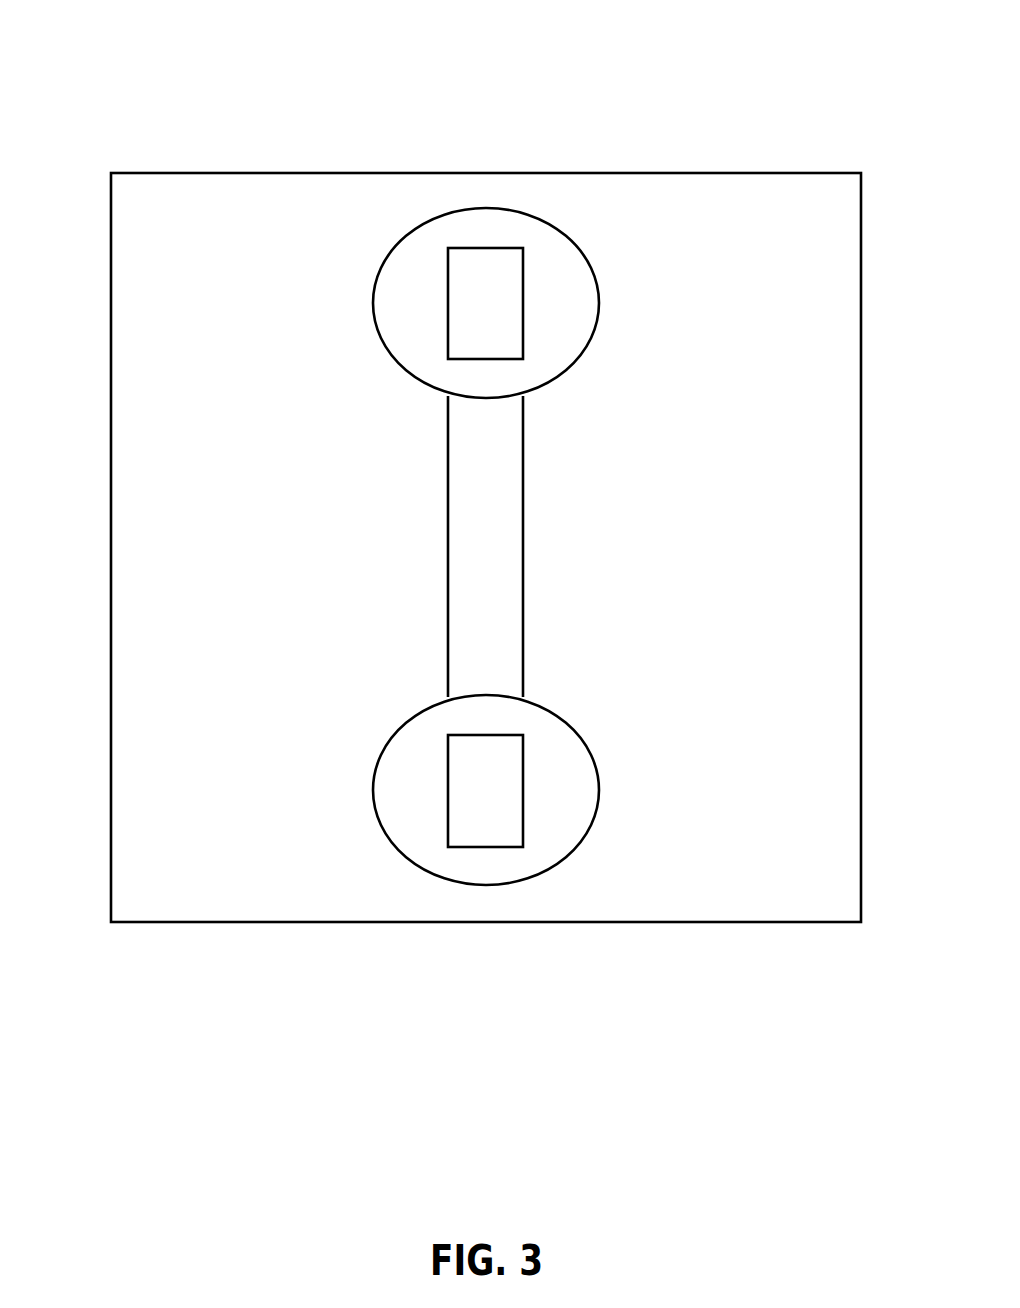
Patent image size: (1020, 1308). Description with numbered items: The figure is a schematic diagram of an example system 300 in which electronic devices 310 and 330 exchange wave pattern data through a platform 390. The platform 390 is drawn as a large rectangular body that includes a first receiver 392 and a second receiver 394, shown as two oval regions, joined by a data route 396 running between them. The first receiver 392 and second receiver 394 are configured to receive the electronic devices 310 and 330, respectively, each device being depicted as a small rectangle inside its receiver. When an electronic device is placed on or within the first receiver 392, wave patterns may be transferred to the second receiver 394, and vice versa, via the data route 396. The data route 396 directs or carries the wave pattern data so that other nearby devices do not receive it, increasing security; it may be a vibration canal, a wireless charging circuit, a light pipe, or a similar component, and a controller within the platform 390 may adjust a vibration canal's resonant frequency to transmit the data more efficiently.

The system 300 is at (213, 86).
The electronic device 310 is at (510, 230).
The electronic device 330 is at (466, 866).
The platform 390 is at (697, 157).
The first receiver 392 is at (438, 197).
The second receiver 394 is at (538, 896).
The data route 396 is at (432, 542).